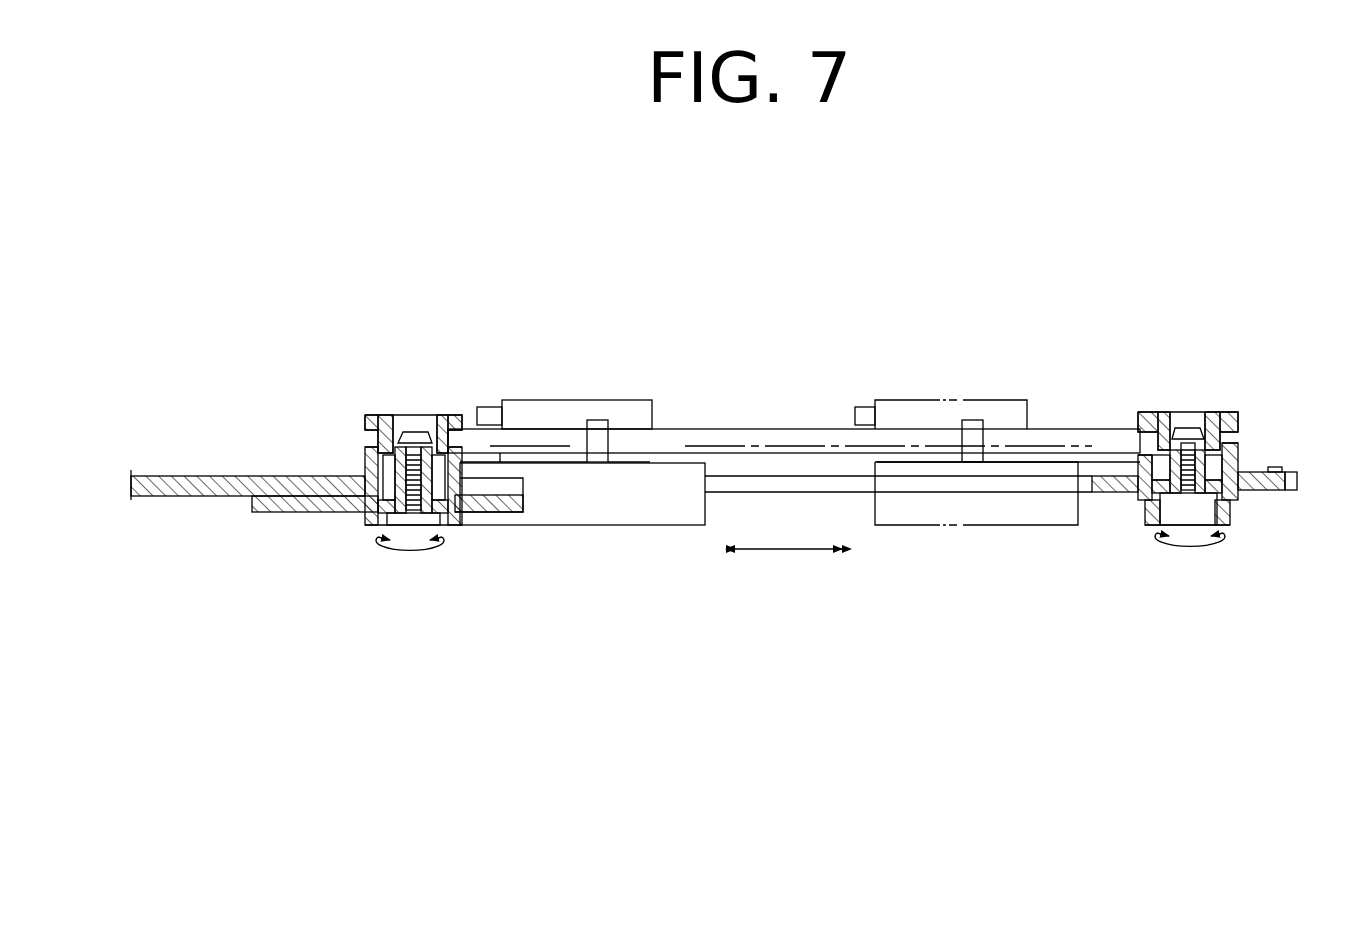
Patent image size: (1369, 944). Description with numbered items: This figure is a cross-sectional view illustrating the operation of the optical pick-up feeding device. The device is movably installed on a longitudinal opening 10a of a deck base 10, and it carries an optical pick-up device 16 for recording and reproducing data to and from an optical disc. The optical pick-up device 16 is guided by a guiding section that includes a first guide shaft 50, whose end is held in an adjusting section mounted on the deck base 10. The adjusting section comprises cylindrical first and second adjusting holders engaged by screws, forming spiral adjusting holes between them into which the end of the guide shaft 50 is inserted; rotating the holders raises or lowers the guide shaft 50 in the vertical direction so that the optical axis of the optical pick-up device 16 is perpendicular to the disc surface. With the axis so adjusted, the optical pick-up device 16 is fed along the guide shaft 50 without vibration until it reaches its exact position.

The deck base 10 is at (192, 486).
The longitudinal opening 10a is at (1022, 487).
The optical pick-up device 16 is at (547, 402).
The first guide shaft 50 is at (557, 447).